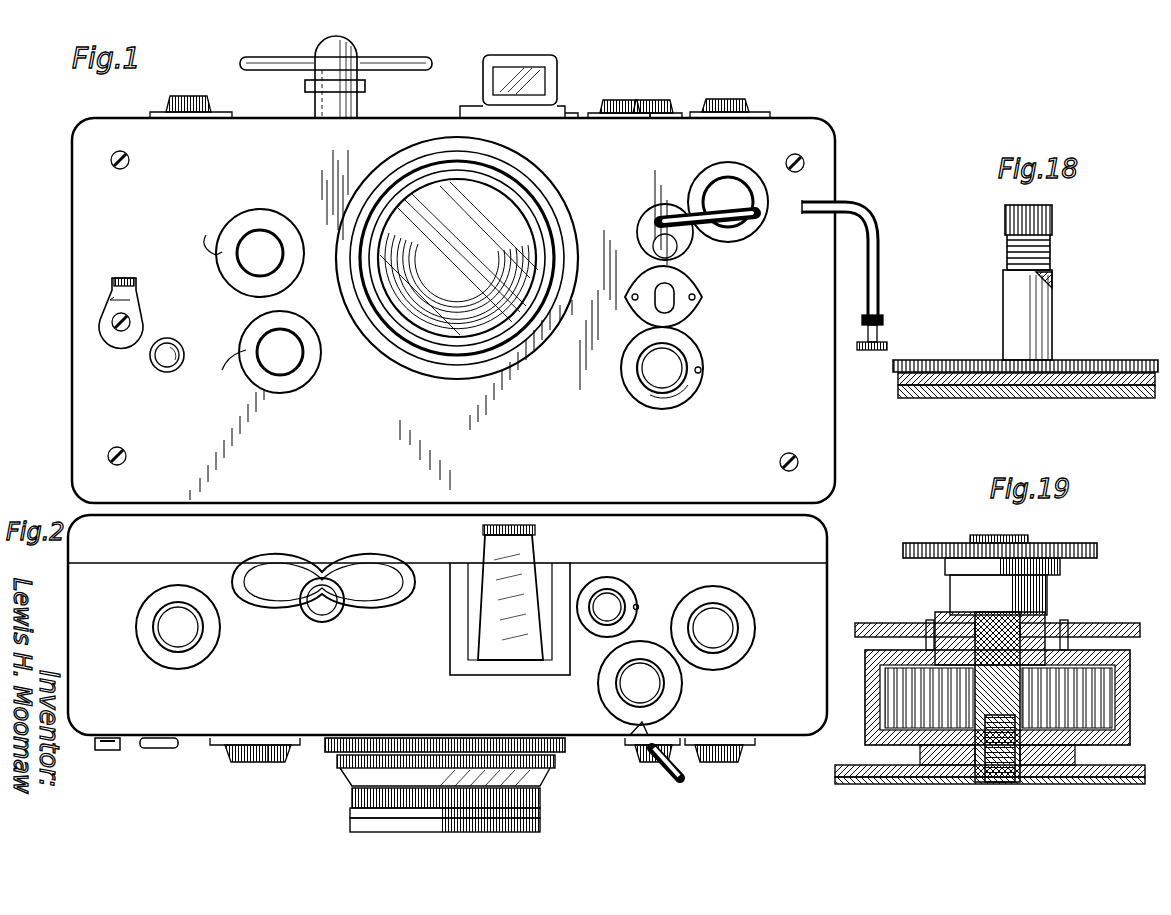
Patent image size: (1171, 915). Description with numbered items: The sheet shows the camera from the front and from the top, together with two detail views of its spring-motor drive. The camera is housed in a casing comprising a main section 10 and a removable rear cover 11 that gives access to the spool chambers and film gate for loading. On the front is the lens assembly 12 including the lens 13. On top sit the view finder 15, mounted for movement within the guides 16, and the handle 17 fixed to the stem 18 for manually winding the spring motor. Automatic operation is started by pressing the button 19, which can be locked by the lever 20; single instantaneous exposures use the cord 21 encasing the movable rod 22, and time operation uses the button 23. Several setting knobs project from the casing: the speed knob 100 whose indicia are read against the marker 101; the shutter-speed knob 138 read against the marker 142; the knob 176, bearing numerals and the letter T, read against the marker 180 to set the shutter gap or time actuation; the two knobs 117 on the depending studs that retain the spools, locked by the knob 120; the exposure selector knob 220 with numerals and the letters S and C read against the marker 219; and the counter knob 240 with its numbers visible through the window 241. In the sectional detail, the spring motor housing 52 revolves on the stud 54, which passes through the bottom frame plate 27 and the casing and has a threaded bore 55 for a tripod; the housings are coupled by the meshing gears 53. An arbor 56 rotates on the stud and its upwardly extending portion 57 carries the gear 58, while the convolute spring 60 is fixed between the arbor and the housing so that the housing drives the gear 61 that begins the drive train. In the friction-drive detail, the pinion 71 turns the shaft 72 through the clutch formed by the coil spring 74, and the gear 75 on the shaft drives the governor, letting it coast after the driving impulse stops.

In FIG. 1, the main section 10 is at (836, 418).
In FIG. 2, the main section 10 is at (447, 625).
In FIG. 18, the main section 10 is at (970, 398).
In FIG. 19, the main section 10 is at (845, 784).
In FIG. 2, the rear cover 11 is at (828, 548).
In FIG. 1, the lens assembly 12 is at (512, 358).
In FIG. 2, the lens assembly 12 is at (556, 800).
In FIG. 1, the lens 13 is at (505, 205).
In FIG. 1, the view finder 15 is at (552, 60).
In FIG. 2, the view finder 15 is at (495, 614).
In FIG. 1, the guides 16 is at (566, 106).
In FIG. 2, the guides 16 is at (458, 675).
In FIG. 1, the handle 17 is at (408, 72).
In FIG. 2, the handle 17 is at (250, 560).
In FIG. 1, the stem 18 is at (358, 52).
In FIG. 1, the button 19 is at (168, 372).
In FIG. 2, the button 19 is at (158, 750).
In FIG. 1, the lever 20 is at (137, 292).
In FIG. 2, the lever 20 is at (108, 752).
In FIG. 1, the cord 21 is at (742, 232).
In FIG. 2, the cord 21 is at (672, 782).
In FIG. 1, the movable rod 22 is at (883, 328).
In FIG. 1, the button 23 is at (670, 248).
In FIG. 2, the button 23 is at (645, 762).
In FIG. 18, the bottom frame plate 27 is at (1115, 373).
In FIG. 19, the bottom frame plate 27 is at (860, 768).
In FIG. 1, the housing 52 is at (664, 298).
In FIG. 19, the housing 52 is at (868, 704).
In FIG. 19, the meshing gears 53 is at (1045, 765).
In FIG. 19, the stud 54 is at (930, 765).
In FIG. 19, the threaded bore 55 is at (995, 782).
In FIG. 19, the arbor 56 is at (1085, 760).
In FIG. 19, the upwardly extending portion 57 is at (1005, 618).
In FIG. 19, the gear 58 is at (932, 545).
In FIG. 19, the convolute spring 60 is at (870, 660).
In FIG. 19, the gear 61 is at (905, 624).
In FIG. 18, the pinion 71 is at (1052, 216).
In FIG. 18, the shaft 72 is at (1052, 296).
In FIG. 18, the coil spring 74 is at (1050, 254).
In FIG. 18, the gear 75 is at (965, 360).
In FIG. 1, the knob 100 is at (270, 345).
In FIG. 2, the knob 100 is at (288, 762).
In FIG. 1, the marker 101 is at (227, 371).
In FIG. 1, the knob 117 is at (188, 96).
In FIG. 2, the knob 117 is at (207, 643).
In FIG. 1, the knob 120 is at (614, 100).
In FIG. 2, the knob 120 is at (624, 590).
In FIG. 1, the knob 138 is at (252, 212).
In FIG. 2, the knob 138 is at (240, 762).
In FIG. 1, the marker 142 is at (204, 235).
In FIG. 1, the knob 176 is at (715, 188).
In FIG. 2, the knob 176 is at (724, 762).
In FIG. 1, the marker 180 is at (800, 204).
In FIG. 2, the marker 219 is at (646, 728).
In FIG. 1, the knob 220 is at (658, 100).
In FIG. 2, the knob 220 is at (678, 684).
In FIG. 1, the knob 240 is at (690, 352).
In FIG. 1, the window 241 is at (638, 285).